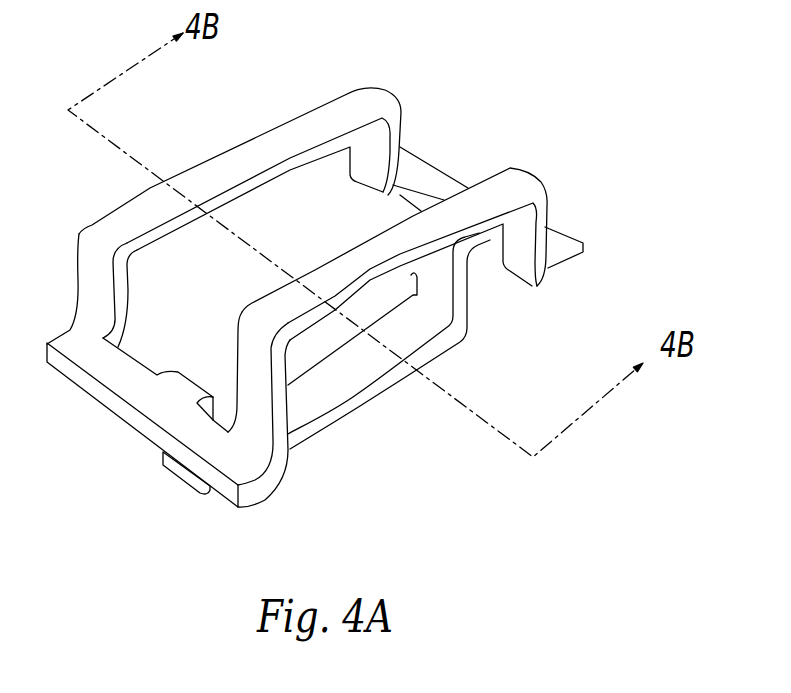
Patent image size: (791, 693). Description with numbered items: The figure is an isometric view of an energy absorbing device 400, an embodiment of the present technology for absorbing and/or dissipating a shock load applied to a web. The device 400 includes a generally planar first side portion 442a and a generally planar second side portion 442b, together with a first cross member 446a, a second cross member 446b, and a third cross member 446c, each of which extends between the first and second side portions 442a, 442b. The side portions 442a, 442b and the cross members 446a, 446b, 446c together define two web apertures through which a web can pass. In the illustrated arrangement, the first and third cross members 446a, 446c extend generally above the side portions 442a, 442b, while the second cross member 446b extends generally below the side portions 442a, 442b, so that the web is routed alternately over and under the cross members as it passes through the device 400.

The energy absorbing device 400 is at (79, 234).
The first side portion 442a is at (167, 403).
The second side portion 442b is at (555, 253).
The first cross member 446a is at (280, 145).
The second cross member 446b is at (323, 383).
The third cross member 446c is at (447, 212).